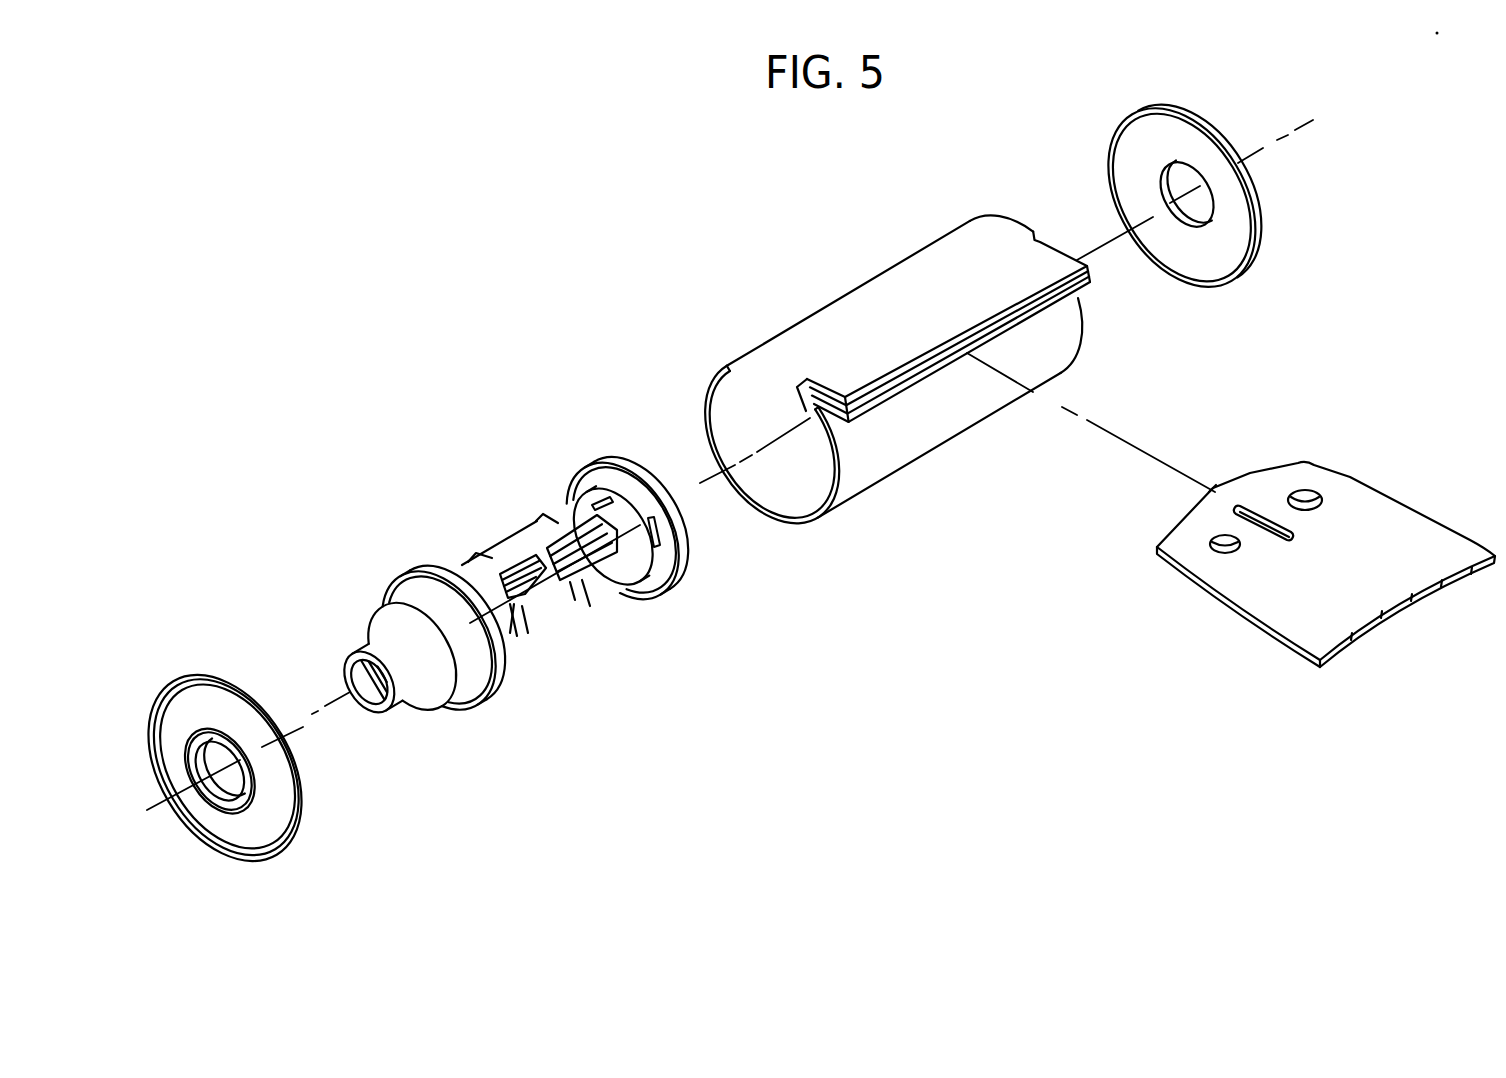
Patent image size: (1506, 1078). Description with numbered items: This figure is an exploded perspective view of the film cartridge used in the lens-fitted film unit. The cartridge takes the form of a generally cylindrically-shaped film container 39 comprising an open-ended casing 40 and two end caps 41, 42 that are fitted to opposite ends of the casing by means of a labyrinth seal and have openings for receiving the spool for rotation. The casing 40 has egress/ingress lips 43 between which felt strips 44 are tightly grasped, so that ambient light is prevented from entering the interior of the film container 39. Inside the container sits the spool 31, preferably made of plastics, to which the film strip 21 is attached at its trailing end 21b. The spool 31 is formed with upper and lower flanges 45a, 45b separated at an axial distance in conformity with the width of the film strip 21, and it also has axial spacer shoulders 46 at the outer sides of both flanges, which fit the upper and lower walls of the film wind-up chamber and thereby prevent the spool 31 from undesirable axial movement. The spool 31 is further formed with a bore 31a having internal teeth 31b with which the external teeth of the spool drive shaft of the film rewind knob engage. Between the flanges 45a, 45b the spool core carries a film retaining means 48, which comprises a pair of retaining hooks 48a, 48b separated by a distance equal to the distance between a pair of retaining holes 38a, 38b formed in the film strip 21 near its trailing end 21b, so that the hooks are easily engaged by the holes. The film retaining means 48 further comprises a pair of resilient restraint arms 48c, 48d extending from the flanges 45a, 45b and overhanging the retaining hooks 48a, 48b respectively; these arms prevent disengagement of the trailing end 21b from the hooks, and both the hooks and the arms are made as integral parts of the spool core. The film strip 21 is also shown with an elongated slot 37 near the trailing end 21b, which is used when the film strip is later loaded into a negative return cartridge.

The film strip 21 is at (1300, 516).
The trailing end 21b is at (1202, 500).
The spool 31 is at (493, 591).
The bore 31a is at (380, 707).
The internal teeth 31b is at (345, 663).
The elongated slot 37 is at (1273, 540).
The retaining hole 38a is at (1301, 496).
The retaining hole 38b is at (1225, 550).
The film container 39 is at (915, 371).
The open-ended casing 40 is at (855, 323).
The end cap 41 is at (297, 800).
The end cap 42 is at (1170, 116).
The egress/ingress lips 43 is at (1022, 287).
The felt strips 44 is at (872, 408).
The upper flange 45a is at (402, 578).
The lower flange 45b is at (628, 524).
The axial spacer shoulders 46 is at (460, 668).
The film retaining means 48 is at (540, 588).
The retaining hook 48a is at (590, 583).
The retaining hook 48b is at (518, 636).
The resilient restraint arm 48c is at (575, 598).
The resilient restraint arm 48d is at (505, 562).